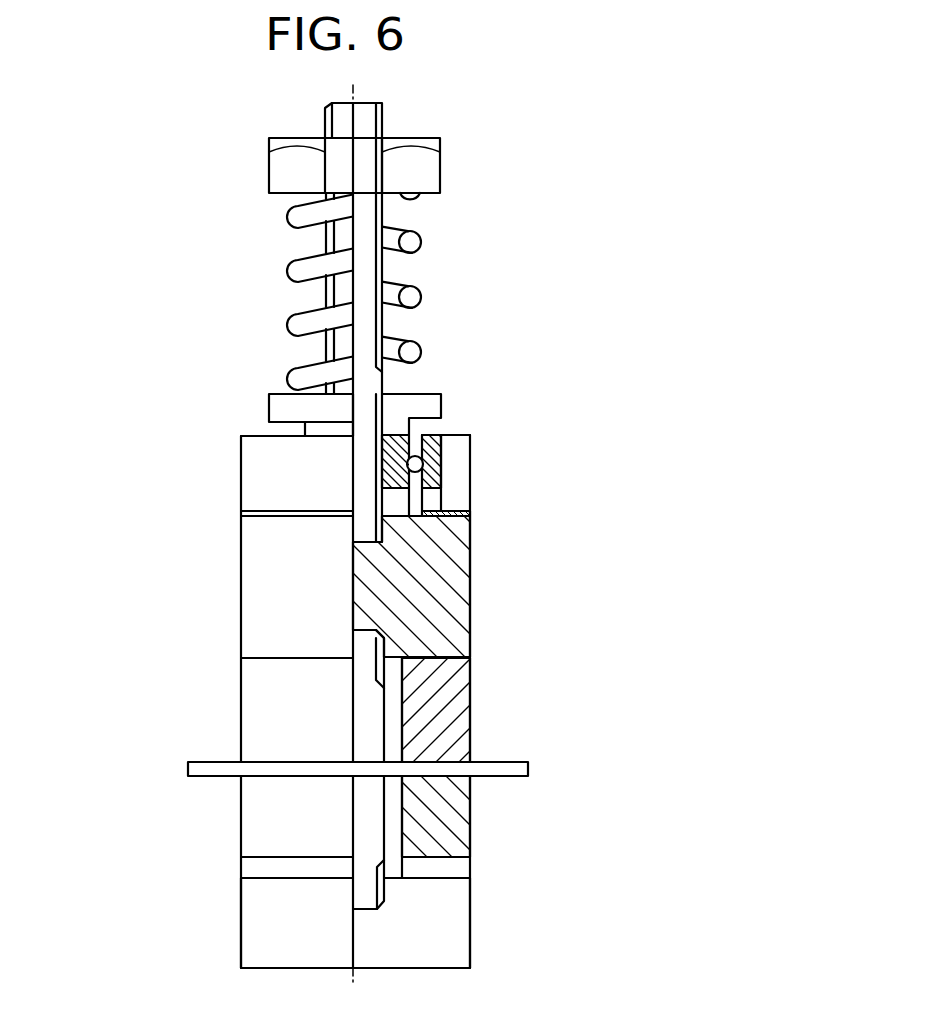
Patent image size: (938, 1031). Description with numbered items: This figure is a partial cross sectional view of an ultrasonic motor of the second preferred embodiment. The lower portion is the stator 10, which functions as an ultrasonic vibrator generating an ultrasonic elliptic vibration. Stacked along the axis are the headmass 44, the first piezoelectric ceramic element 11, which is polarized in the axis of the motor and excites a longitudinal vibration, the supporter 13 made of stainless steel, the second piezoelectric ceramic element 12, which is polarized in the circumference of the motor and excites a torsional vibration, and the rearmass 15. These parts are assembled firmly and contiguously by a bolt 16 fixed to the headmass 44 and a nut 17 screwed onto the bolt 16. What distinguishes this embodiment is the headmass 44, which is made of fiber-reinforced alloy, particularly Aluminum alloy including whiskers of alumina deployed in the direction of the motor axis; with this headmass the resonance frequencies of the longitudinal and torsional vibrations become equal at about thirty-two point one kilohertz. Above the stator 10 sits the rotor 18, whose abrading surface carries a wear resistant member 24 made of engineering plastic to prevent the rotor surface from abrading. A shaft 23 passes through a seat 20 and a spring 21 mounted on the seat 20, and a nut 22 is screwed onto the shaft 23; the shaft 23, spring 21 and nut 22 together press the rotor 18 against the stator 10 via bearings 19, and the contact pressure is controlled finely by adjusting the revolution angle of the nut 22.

The stator 10 is at (163, 970).
The first piezoelectric ceramic element 11 is at (470, 693).
The second piezoelectric ceramic element 12 is at (470, 840).
The supporter 13 is at (528, 766).
The rearmass 15 is at (470, 868).
The bolt 16 is at (384, 800).
The nut 17 is at (470, 927).
The rotor 18 is at (470, 481).
The bearings 19 is at (470, 460).
The seat 20 is at (441, 408).
The spring 21 is at (421, 297).
The nut 22 is at (440, 170).
The shaft 23 is at (382, 110).
The wear resistant member 24 is at (470, 513).
The headmass 44 is at (470, 587).